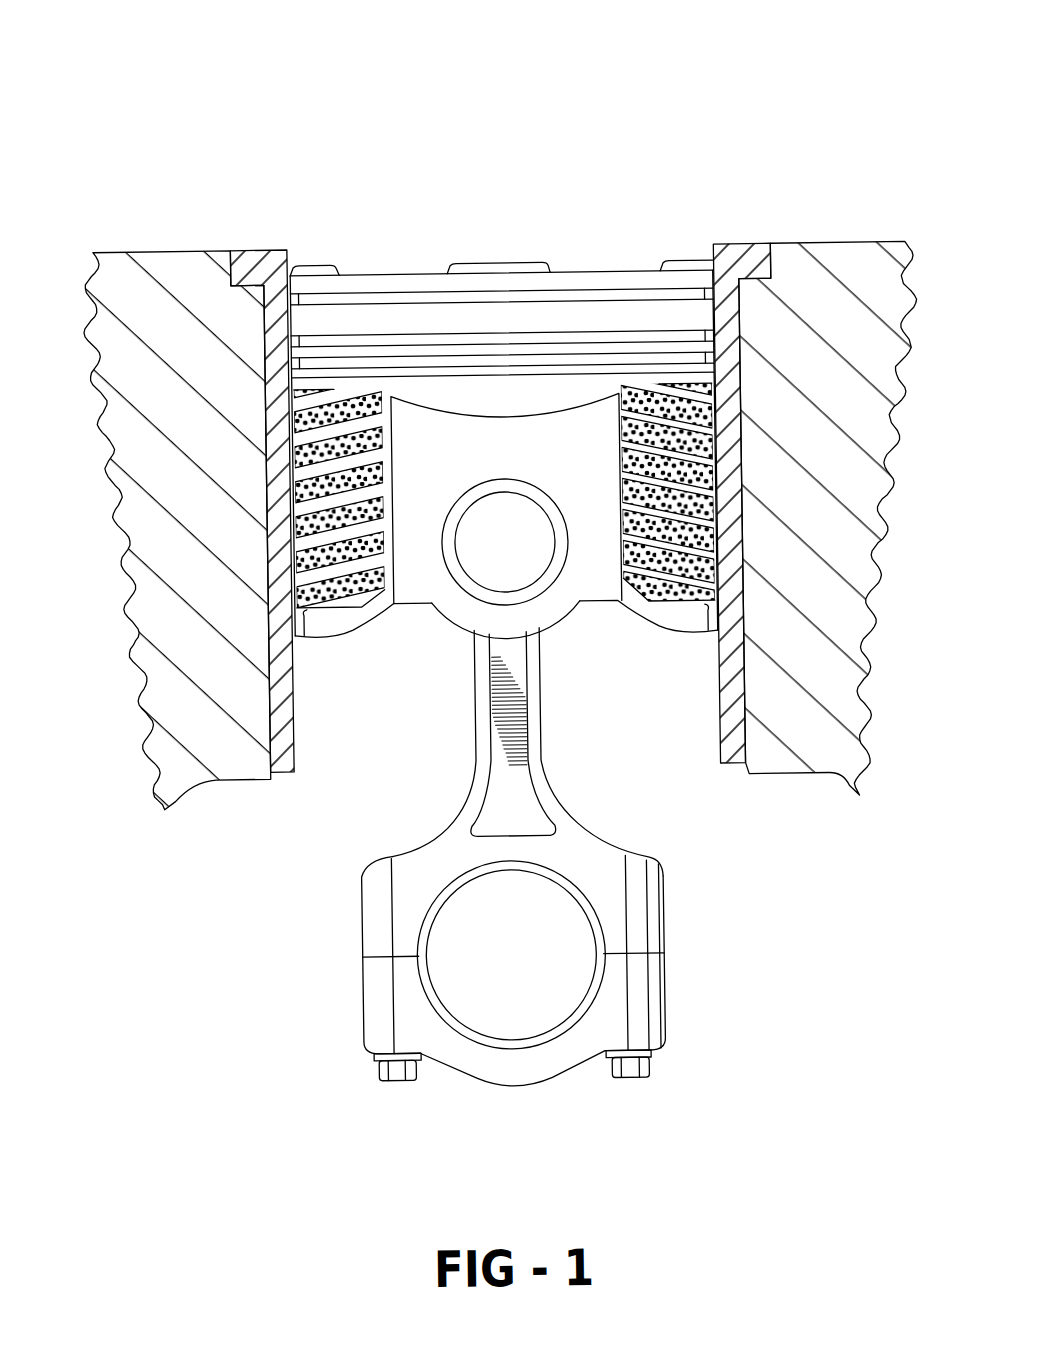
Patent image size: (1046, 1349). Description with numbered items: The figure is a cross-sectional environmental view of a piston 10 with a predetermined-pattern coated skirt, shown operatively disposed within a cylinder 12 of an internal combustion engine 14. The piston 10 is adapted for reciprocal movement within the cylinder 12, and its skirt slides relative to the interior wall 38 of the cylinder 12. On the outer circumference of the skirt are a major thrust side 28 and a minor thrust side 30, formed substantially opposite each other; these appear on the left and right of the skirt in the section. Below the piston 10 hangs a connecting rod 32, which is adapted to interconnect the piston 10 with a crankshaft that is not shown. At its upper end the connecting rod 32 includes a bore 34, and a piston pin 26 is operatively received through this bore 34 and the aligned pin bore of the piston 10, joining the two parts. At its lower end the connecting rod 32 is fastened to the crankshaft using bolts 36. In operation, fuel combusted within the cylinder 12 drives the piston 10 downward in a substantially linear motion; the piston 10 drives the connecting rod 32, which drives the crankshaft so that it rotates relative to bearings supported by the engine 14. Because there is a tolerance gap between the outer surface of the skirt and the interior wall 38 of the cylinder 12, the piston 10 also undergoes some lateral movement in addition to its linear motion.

The piston 10 is at (344, 178).
The cylinder 12 is at (346, 806).
The internal combustion engine 14 is at (191, 452).
The piston pin 26 is at (553, 561).
The major thrust side 28 is at (304, 609).
The minor thrust side 30 is at (704, 615).
The connecting rod 32 is at (563, 806).
The bore 34 is at (520, 568).
The bolts 36 is at (388, 1079).
The interior wall 38 is at (292, 727).